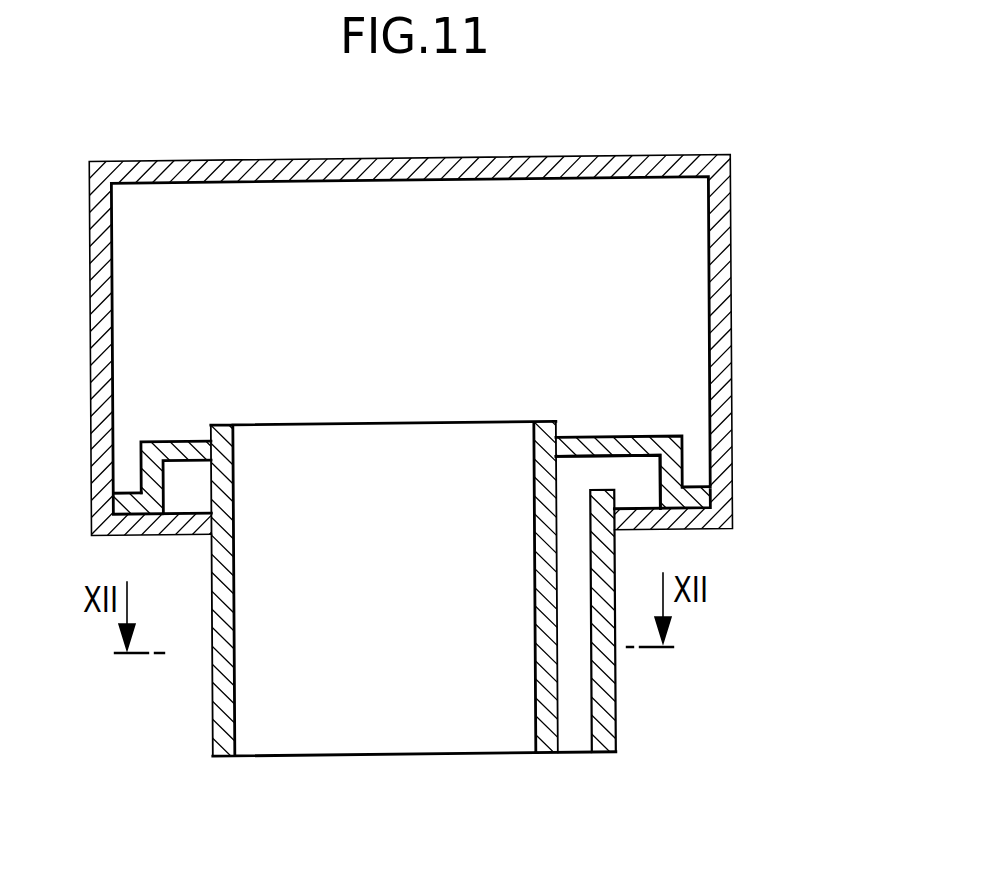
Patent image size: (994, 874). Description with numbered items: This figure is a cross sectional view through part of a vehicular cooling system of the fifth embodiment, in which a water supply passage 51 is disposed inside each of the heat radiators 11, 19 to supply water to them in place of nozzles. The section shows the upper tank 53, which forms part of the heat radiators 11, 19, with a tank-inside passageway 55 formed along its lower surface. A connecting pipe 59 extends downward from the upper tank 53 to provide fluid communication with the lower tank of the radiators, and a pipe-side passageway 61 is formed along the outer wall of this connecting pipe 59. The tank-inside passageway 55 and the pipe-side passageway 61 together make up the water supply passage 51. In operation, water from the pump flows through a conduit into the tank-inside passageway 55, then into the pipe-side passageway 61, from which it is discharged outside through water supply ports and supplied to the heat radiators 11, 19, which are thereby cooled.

The heat radiator 11 is at (522, 462).
The heat radiator 19 is at (551, 144).
The upper tank 53 is at (541, 512).
The water supply passage 51 is at (411, 478).
The tank-inside passageway 55 is at (608, 482).
The connecting pipe 59 is at (413, 590).
The pipe-side passageway 61 is at (603, 626).